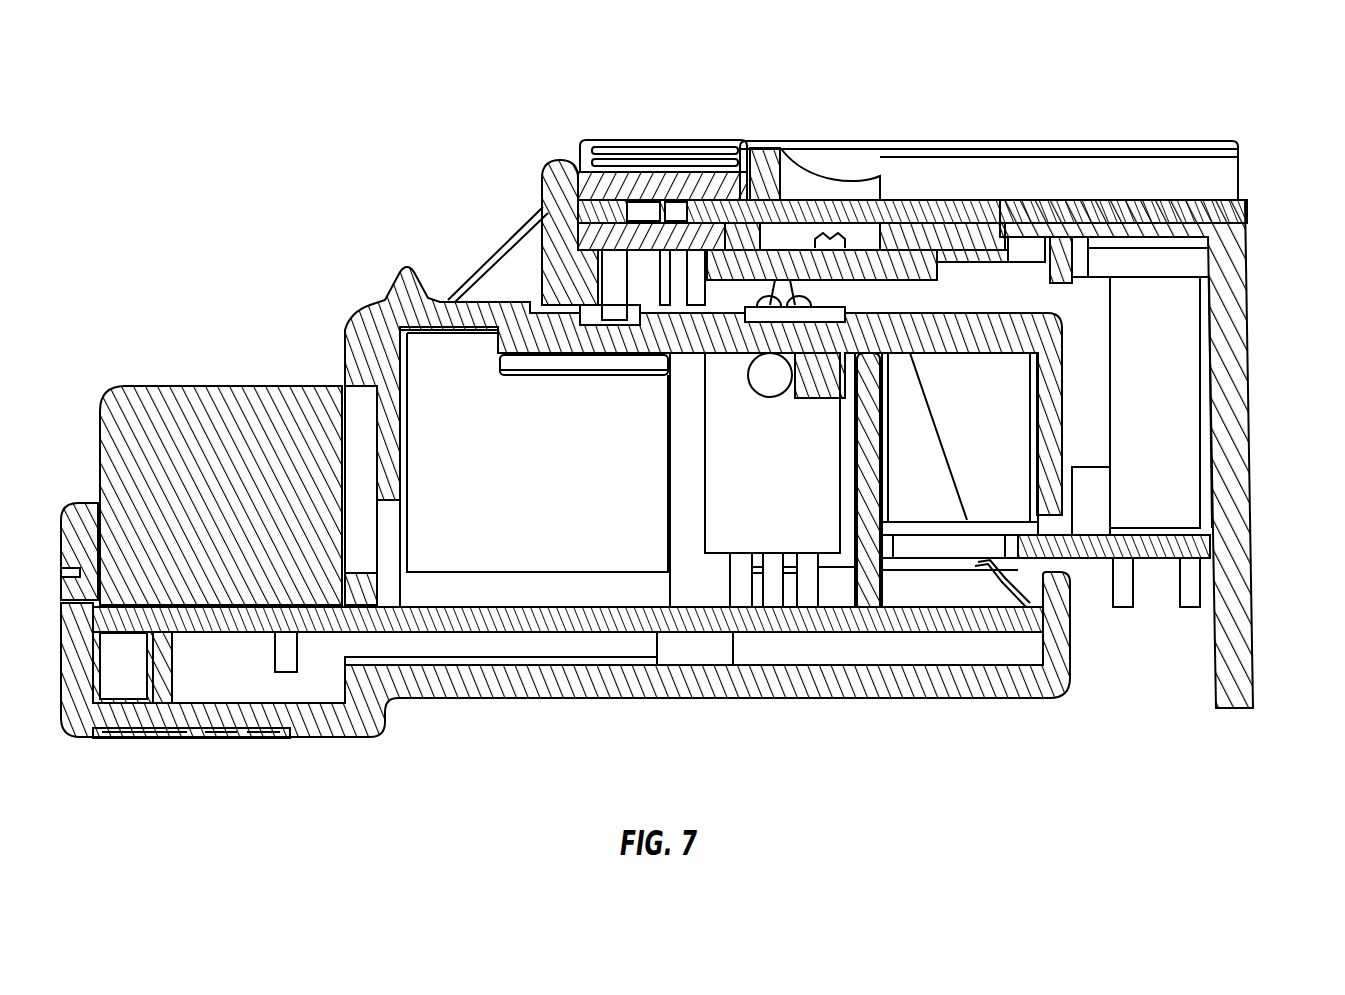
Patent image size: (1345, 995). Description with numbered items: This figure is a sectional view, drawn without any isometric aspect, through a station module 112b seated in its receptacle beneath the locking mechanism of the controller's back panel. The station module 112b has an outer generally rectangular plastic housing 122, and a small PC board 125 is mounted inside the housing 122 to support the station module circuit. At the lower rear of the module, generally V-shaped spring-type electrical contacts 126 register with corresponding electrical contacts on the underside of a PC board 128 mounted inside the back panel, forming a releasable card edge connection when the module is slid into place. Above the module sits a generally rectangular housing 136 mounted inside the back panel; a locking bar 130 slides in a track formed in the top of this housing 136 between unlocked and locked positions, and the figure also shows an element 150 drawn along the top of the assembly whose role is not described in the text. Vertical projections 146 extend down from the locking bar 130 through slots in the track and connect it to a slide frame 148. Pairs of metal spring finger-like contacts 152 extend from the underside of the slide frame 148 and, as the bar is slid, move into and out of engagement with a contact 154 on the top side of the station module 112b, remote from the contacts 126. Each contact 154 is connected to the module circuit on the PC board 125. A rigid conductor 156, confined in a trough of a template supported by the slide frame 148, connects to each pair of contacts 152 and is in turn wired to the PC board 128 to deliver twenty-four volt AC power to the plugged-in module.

The station module 112b is at (151, 745).
The housing 122 is at (570, 699).
The PC board 125 is at (517, 613).
The spring-type electrical contacts 126 is at (1002, 580).
The PC board 128 is at (1082, 553).
The locking bar 130 is at (585, 183).
The housing 136 is at (1251, 389).
The vertical projections 146 is at (730, 167).
The slide frame 148 is at (585, 235).
The cover bar 150 is at (1005, 200).
The spring finger-like contacts 152 is at (770, 292).
The contact 154 is at (770, 312).
The rigid conductor 156 is at (833, 237).